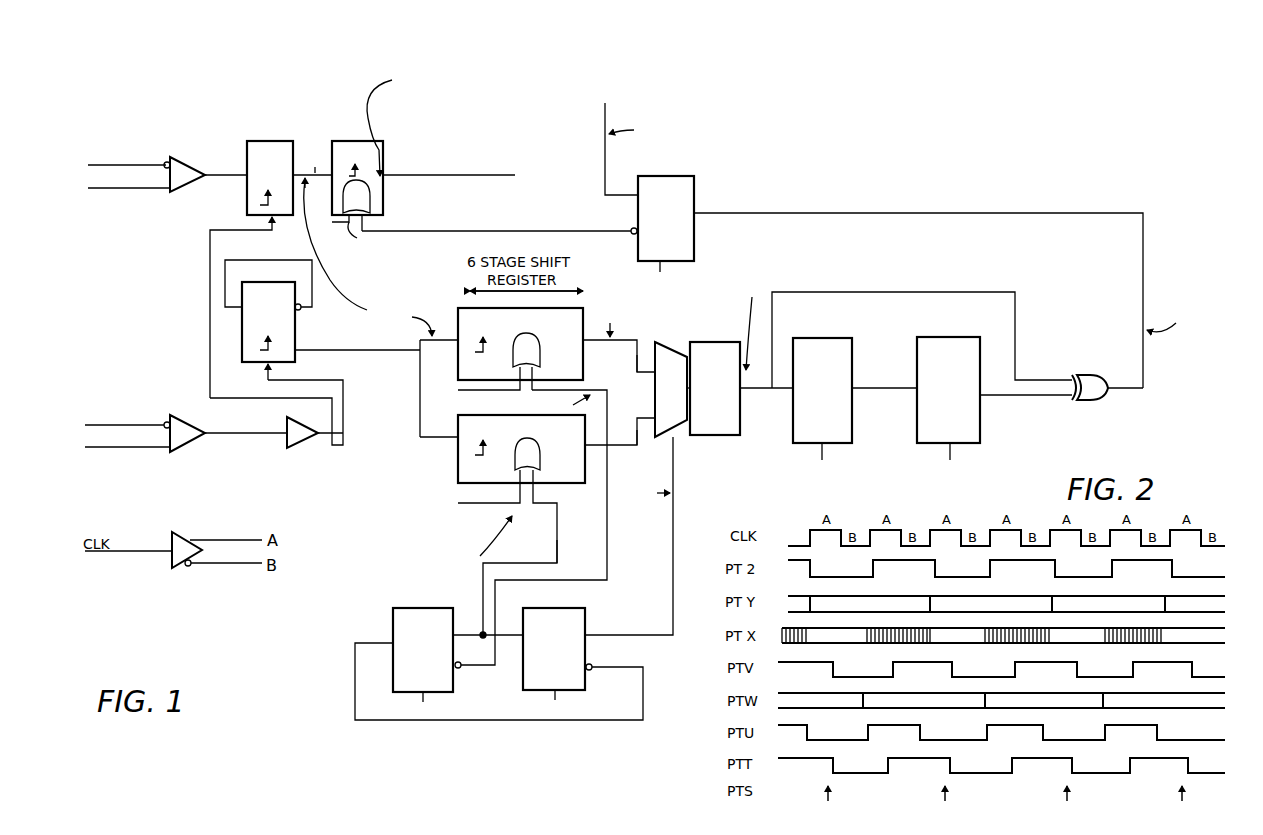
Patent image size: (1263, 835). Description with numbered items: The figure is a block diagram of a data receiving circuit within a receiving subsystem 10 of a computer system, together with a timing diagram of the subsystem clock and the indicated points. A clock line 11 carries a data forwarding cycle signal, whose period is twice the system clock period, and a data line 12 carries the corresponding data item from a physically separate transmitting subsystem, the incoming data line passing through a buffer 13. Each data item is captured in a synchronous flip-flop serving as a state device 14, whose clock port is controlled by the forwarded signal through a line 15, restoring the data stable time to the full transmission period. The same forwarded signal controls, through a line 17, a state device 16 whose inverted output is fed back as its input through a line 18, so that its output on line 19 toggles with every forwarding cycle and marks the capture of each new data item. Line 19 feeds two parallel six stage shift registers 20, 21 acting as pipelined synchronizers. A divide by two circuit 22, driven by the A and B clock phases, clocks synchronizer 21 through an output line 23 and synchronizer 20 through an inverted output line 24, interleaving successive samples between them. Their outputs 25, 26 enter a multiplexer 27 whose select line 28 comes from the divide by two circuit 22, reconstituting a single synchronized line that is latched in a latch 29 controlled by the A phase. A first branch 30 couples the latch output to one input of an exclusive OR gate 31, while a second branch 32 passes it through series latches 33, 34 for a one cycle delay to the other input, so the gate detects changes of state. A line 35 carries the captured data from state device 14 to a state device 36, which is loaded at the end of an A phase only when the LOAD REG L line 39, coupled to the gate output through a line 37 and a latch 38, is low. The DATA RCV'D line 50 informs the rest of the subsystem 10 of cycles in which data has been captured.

The receiving subsystem 10 is at (288, 156).
The clock line 11 is at (212, 432).
The data line 12 is at (222, 181).
The buffer 13 is at (286, 431).
The state device 14 is at (282, 104).
The line 15 is at (210, 316).
The state device 16 is at (292, 361).
The line 17 is at (343, 398).
The line 18 is at (288, 262).
The line 19 is at (350, 346).
The six stage shift register 20 is at (583, 368).
The six stage shift register 21 is at (495, 413).
The divide by two circuit 22 is at (395, 607).
The output line 23 is at (550, 561).
The inverted output line 24 is at (594, 580).
The output 25 is at (632, 341).
The output 26 is at (651, 417).
The multiplexer 27 is at (673, 342).
The select line 28 is at (625, 640).
The latch 29 is at (700, 342).
The first branch 30 is at (907, 291).
The exclusive OR gate 31 is at (1090, 375).
The second branch 32 is at (787, 394).
The latch 33 is at (838, 338).
The latch 34 is at (958, 331).
The line 35 is at (312, 162).
The state device 36 is at (364, 141).
The line 37 is at (1031, 213).
The latch 38 is at (658, 176).
The LOAD REG L line 39 is at (584, 230).
The DATA RCV'D line 50 is at (605, 143).